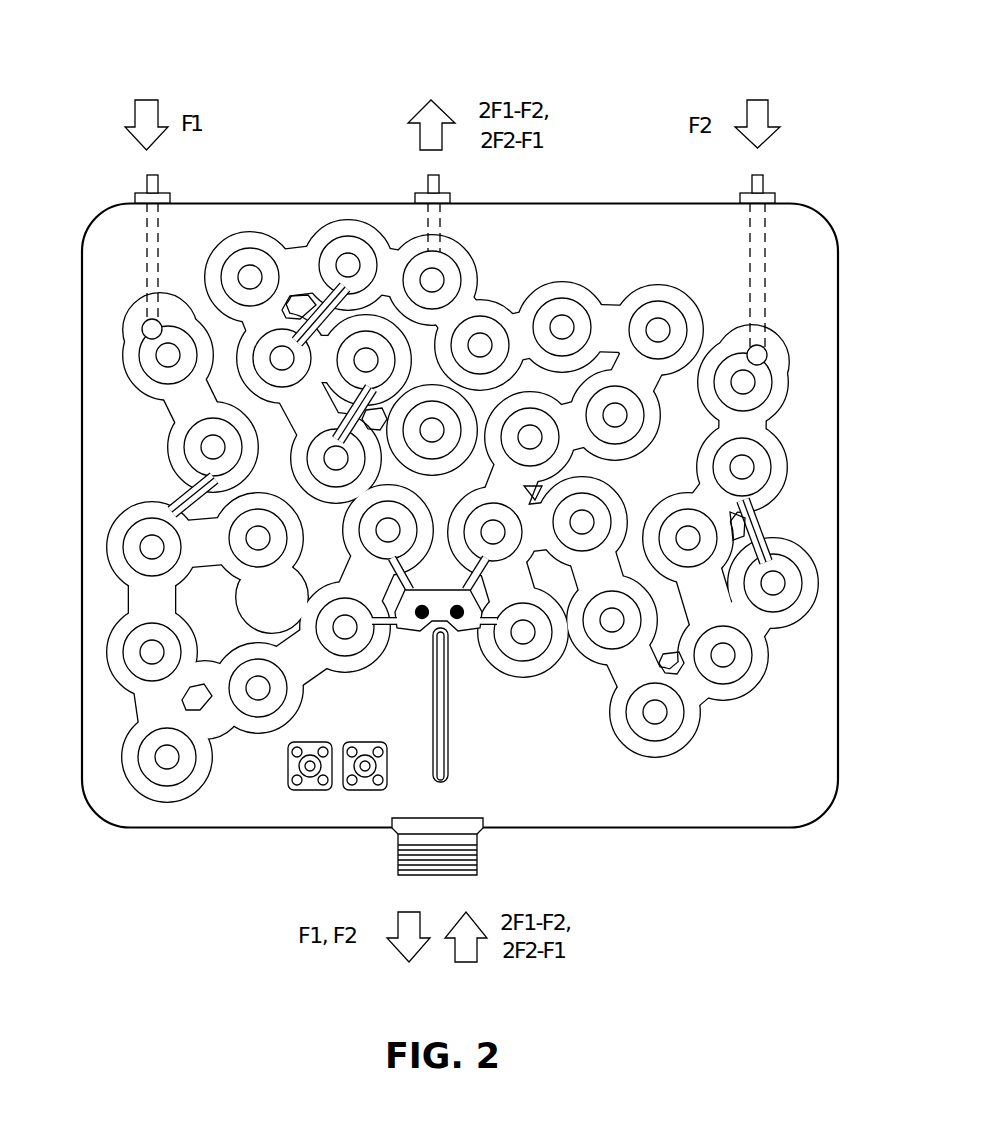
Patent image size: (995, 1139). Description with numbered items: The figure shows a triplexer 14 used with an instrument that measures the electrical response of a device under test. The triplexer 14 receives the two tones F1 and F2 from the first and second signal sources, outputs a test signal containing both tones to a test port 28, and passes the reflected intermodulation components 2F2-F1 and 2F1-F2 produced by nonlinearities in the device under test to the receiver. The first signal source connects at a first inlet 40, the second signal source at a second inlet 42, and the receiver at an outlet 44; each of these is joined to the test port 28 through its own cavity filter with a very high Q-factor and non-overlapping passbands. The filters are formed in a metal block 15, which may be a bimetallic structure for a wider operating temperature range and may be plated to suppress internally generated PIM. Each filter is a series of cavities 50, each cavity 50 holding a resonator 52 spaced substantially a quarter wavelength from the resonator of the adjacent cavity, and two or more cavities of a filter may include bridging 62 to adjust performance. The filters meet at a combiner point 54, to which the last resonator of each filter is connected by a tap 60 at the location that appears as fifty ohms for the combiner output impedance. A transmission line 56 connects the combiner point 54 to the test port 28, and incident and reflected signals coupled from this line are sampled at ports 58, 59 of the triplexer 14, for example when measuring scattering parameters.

The triplexer 14 is at (582, 50).
The metal block 15 is at (460, 516).
The test port 28 is at (493, 860).
The first inlet 40 is at (117, 190).
The second inlet 42 is at (717, 188).
The outlet 44 is at (392, 188).
The cavity 50 is at (680, 737).
The resonator 52 is at (723, 655).
The combiner point 54 is at (442, 597).
The transmission line 56 is at (452, 768).
The incident signal sampling port 58 is at (282, 803).
The reflected signal sampling port 59 is at (335, 823).
The tap 60 is at (486, 622).
The bridging 62 is at (753, 528).